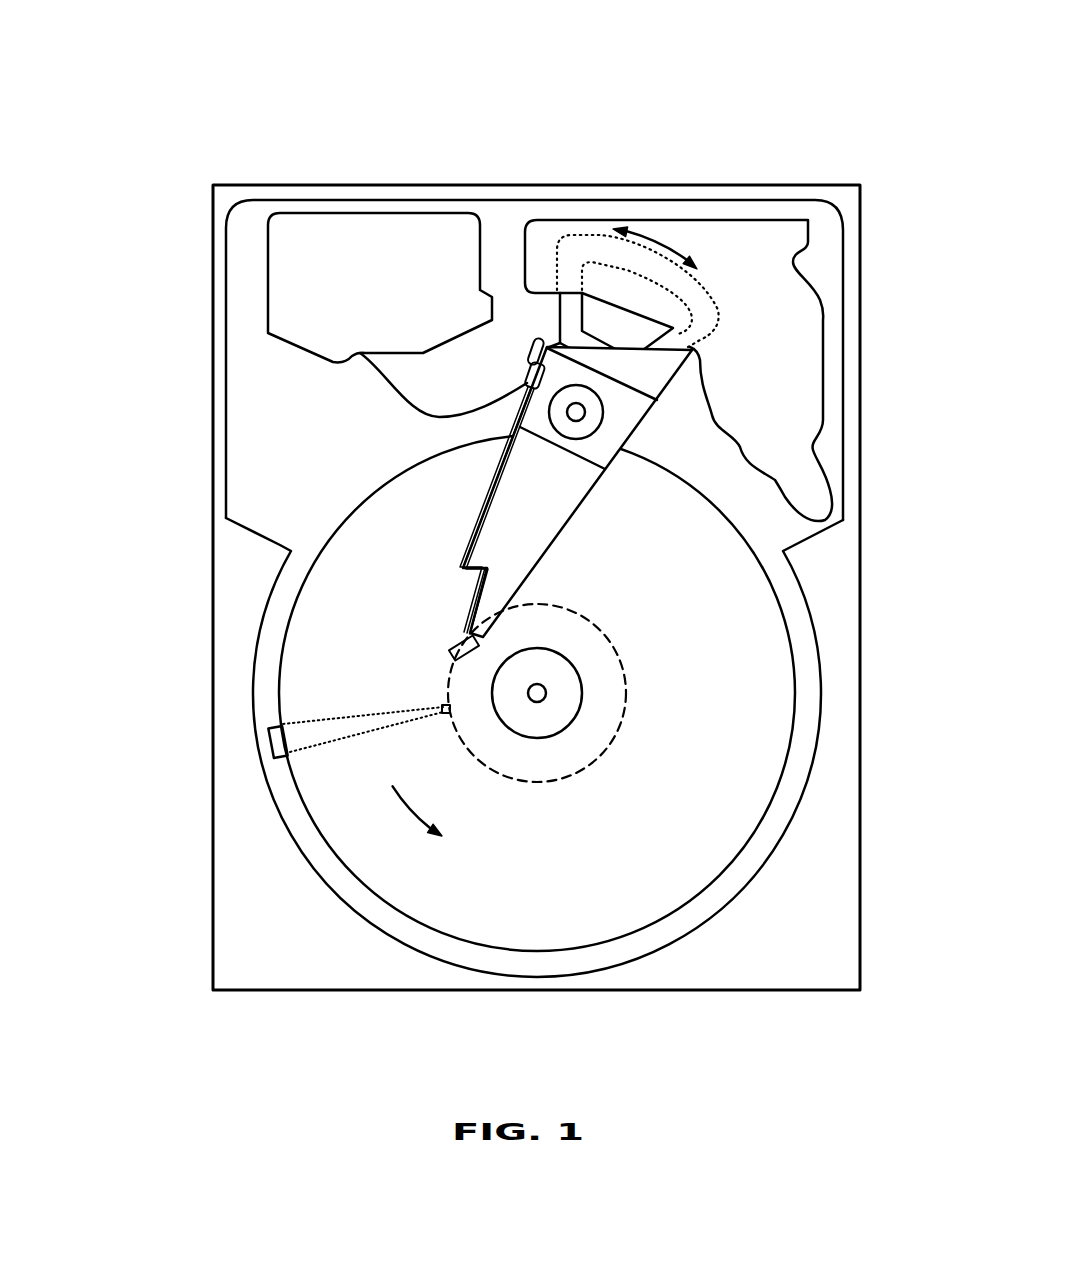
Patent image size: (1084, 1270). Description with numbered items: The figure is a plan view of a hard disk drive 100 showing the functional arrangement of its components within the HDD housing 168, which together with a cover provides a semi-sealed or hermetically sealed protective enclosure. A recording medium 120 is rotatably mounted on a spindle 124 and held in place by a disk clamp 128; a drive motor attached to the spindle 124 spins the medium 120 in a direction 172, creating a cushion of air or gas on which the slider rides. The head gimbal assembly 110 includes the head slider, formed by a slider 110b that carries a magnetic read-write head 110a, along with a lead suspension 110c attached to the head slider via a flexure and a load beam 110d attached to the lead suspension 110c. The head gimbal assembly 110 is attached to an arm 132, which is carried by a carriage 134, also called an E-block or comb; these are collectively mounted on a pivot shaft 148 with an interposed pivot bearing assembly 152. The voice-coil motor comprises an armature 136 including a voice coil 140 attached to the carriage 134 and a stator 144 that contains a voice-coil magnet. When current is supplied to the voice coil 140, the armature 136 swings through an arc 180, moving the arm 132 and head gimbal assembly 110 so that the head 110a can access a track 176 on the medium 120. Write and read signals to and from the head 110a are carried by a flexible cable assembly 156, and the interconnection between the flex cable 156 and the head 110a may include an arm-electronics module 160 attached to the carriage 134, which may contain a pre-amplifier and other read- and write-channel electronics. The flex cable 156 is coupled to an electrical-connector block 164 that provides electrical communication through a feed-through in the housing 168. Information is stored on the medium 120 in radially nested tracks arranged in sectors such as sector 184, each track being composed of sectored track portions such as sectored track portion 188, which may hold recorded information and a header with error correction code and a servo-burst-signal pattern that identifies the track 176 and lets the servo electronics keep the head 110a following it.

The hard disk drive 100 is at (135, 56).
The head gimbal assembly 110 is at (142, 495).
The magnetic read-write head 110a is at (455, 652).
The slider 110b is at (472, 612).
The lead suspension 110c is at (486, 582).
The load beam 110d is at (457, 562).
The recording medium 120 is at (725, 648).
The spindle 124 is at (546, 693).
The disk clamp 128 is at (567, 708).
The arm 132 is at (527, 528).
The carriage 134 is at (597, 443).
The armature 136 is at (553, 323).
The voice coil 140 is at (572, 303).
The stator 144 is at (788, 313).
The pivot shaft 148 is at (586, 412).
The pivot bearing assembly 152 is at (590, 423).
The flexible cable assembly 156 is at (390, 383).
The arm-electronics module 160 is at (527, 375).
The electrical-connector block 164 is at (293, 287).
The HDD housing 168 is at (840, 197).
The direction 172 is at (423, 820).
The track 176 is at (613, 653).
The arc 180 is at (658, 238).
The sector 184 is at (267, 738).
The sectored track portion 188 is at (440, 710).